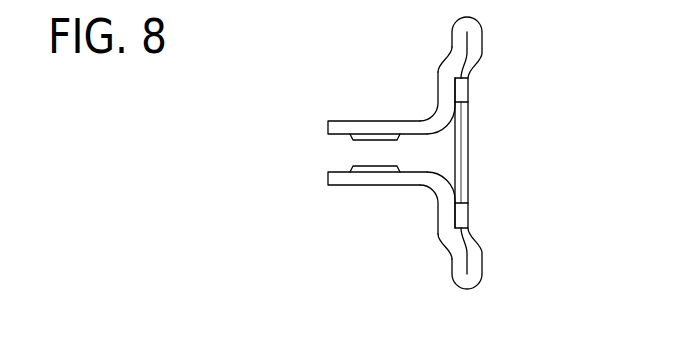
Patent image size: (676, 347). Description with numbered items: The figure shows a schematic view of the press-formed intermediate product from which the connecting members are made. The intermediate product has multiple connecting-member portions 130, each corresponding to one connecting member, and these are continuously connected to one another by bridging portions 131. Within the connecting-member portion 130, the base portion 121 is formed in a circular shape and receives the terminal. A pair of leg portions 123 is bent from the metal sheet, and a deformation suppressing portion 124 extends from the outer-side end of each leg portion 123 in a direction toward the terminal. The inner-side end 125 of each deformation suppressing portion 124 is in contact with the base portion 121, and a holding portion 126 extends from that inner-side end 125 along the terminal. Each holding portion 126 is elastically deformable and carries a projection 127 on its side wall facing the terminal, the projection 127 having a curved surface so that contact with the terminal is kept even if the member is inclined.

The base portion 121 is at (462, 155).
The leg portion 123 is at (473, 44).
The deformation suppressing portion 124 is at (455, 46).
The inner-side end 125 is at (446, 105).
The holding portion 126 is at (341, 124).
The projection 127 is at (350, 171).
The connecting-member portion 130 is at (357, 201).
The bridging portion 131 is at (462, 90).